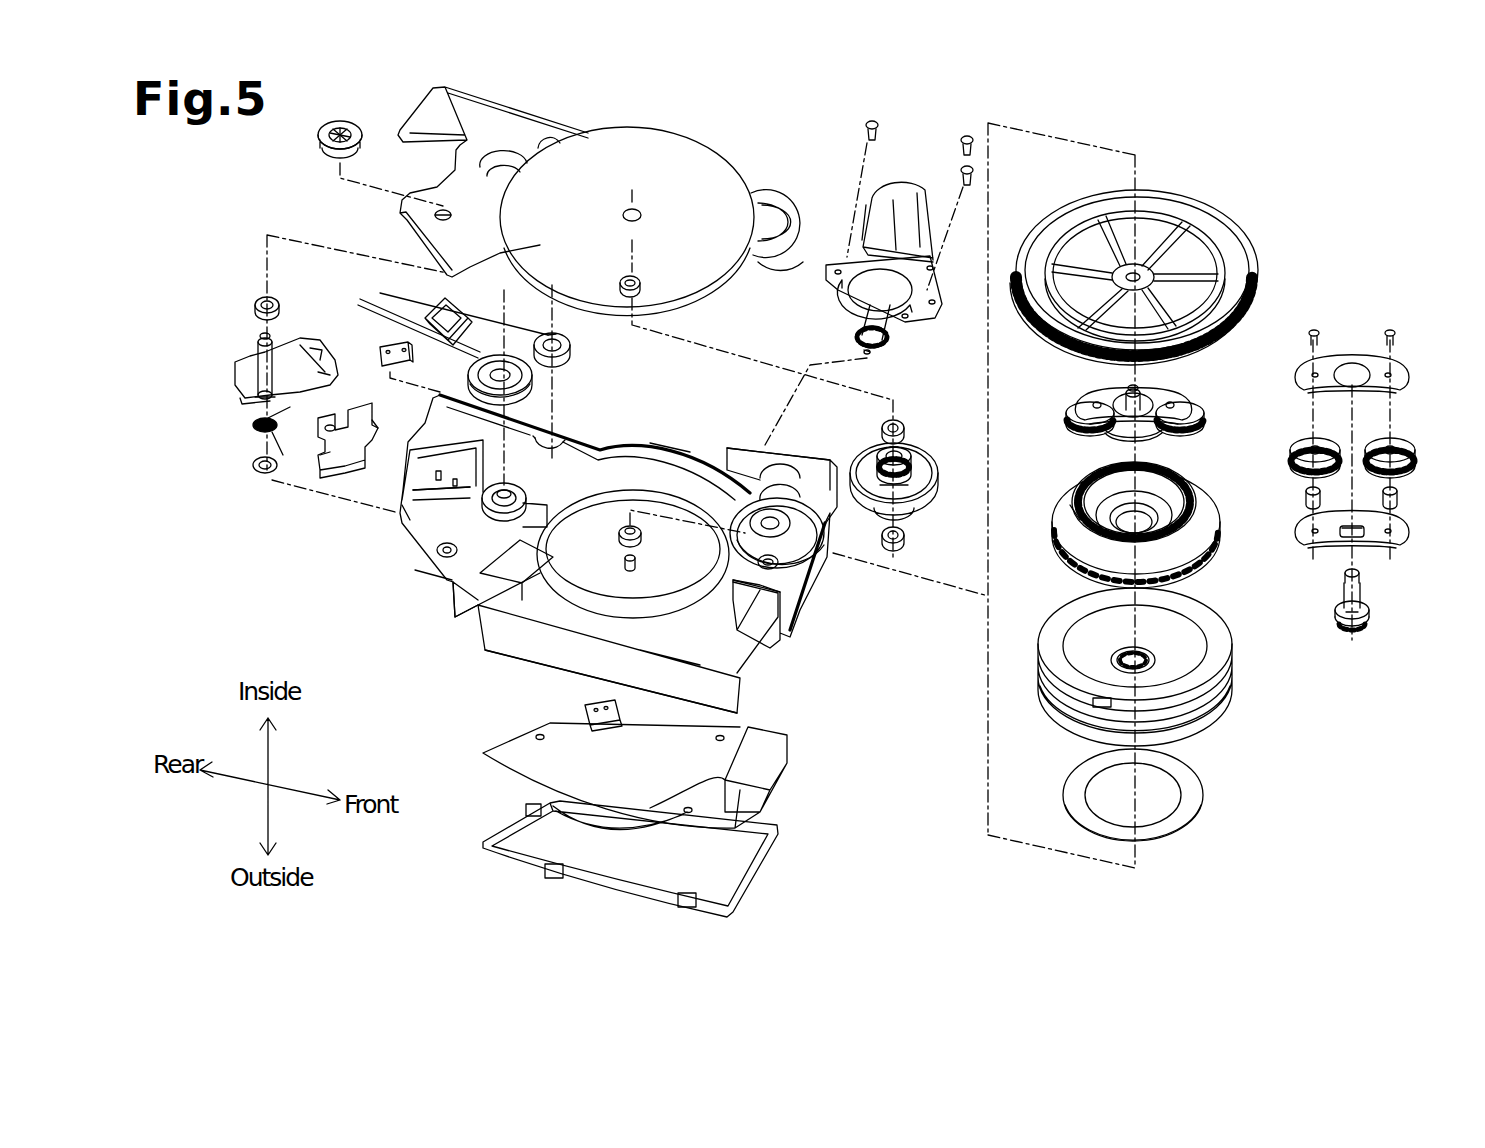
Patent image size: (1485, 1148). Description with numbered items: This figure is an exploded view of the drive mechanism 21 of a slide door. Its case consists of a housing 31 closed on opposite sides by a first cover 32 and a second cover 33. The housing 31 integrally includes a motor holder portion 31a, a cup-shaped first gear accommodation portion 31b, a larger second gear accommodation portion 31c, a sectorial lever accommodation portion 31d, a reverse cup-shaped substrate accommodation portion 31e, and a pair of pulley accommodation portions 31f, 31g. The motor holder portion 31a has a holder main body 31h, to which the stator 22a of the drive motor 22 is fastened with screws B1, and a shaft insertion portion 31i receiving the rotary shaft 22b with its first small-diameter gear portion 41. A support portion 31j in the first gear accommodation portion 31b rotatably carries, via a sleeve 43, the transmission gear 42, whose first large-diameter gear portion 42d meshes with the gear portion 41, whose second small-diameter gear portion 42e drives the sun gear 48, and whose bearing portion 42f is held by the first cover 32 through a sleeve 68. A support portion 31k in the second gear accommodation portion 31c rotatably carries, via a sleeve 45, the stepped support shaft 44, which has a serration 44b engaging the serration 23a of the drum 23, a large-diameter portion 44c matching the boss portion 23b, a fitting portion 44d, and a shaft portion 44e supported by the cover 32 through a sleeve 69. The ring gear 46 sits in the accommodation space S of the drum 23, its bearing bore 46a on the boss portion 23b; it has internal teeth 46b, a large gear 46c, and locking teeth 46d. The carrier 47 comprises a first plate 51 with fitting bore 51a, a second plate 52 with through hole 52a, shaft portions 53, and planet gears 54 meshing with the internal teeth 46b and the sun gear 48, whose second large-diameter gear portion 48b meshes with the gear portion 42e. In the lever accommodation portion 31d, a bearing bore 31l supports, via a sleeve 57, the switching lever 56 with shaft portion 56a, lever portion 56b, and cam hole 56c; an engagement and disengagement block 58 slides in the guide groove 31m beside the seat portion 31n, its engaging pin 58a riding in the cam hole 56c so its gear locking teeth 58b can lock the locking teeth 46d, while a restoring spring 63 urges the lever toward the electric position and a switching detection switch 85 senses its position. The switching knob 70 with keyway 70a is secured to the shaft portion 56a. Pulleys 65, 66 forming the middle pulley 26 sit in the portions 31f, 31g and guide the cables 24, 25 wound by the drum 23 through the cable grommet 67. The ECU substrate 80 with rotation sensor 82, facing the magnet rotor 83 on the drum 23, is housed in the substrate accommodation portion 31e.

The drive mechanism 21 is at (710, 115).
The drive motor 22 is at (904, 259).
The stator 22a is at (878, 195).
The rotary shaft 22b is at (872, 352).
The drum 23 is at (1155, 658).
The serration 23a is at (1075, 640).
The boss portion 23b is at (1158, 660).
The cable 24 is at (470, 355).
The cable 25 is at (534, 328).
The middle pulley 26 is at (640, 365).
The housing 31 is at (601, 554).
The motor holder portion 31a is at (748, 452).
The first gear accommodation portion 31b is at (810, 580).
The second gear accommodation portion 31c is at (678, 478).
The lever accommodation portion 31d is at (445, 600).
The substrate accommodation portion 31e is at (505, 650).
The pulley accommodation portion 31f is at (412, 495).
The pulley accommodation portion 31g is at (582, 447).
The holder main body 31h is at (818, 463).
The shaft insertion portion 31i is at (808, 527).
The support portion 31j is at (748, 590).
The support portion 31k is at (622, 561).
The bearing bore 31l is at (420, 570).
The guide groove 31m is at (510, 580).
The seat portion 31n is at (400, 510).
The first cover 32 is at (722, 144).
The second cover 33 is at (760, 868).
The first small-diameter gear portion 41 is at (856, 334).
The transmission gear 42 is at (924, 482).
The first large-diameter gear portion 42d is at (912, 485).
The second small-diameter gear portion 42e is at (905, 475).
The bearing portion 42f is at (905, 450).
The sleeve 43 is at (905, 540).
The support shaft 44 is at (1279, 522).
The serration 44b is at (1348, 632).
The large-diameter portion 44c is at (1366, 626).
The fitting portion 44d is at (1370, 606).
The shaft portion 44e is at (1345, 590).
The sleeve 45 is at (642, 536).
The ring gear 46 is at (1124, 513).
The bearing bore 46a is at (1110, 540).
The internal teeth 46b is at (1090, 480).
The large gear 46c is at (1066, 528).
The locking teeth 46d is at (1070, 490).
The carrier 47 is at (1409, 340).
The sun gear 48 is at (1165, 277).
The second large-diameter gear portion 48b is at (1258, 280).
The first plate 51 is at (1278, 507).
The fitting bore 51a is at (1345, 538).
The second plate 52 is at (1110, 392).
The through hole 52a is at (1352, 362).
The shaft portion 53 is at (1322, 494).
The planet gear 54 is at (1070, 404).
The switching lever 56 is at (273, 370).
The shaft portion 56a is at (256, 400).
The lever portion 56b is at (322, 357).
The cam hole 56c is at (280, 302).
The sleeve 57 is at (253, 470).
The engagement and disengagement block 58 is at (348, 423).
The engaging pin 58a is at (322, 460).
The gear locking teeth 58b is at (388, 417).
The restoring spring 63 is at (256, 430).
The pulley 65 is at (540, 376).
The pulley 66 is at (572, 350).
The cable grommet 67 is at (462, 295).
The sleeve 68 is at (905, 424).
The sleeve 69 is at (642, 282).
The switching knob 70 is at (318, 136).
The keyway 70a is at (340, 120).
The ECU substrate 80 is at (500, 765).
The rotation sensor 82 is at (608, 722).
The magnet rotor 83 is at (1200, 802).
The switching detection switch 85 is at (382, 346).
The screws B1 is at (960, 172).
The accommodation space S is at (1156, 623).